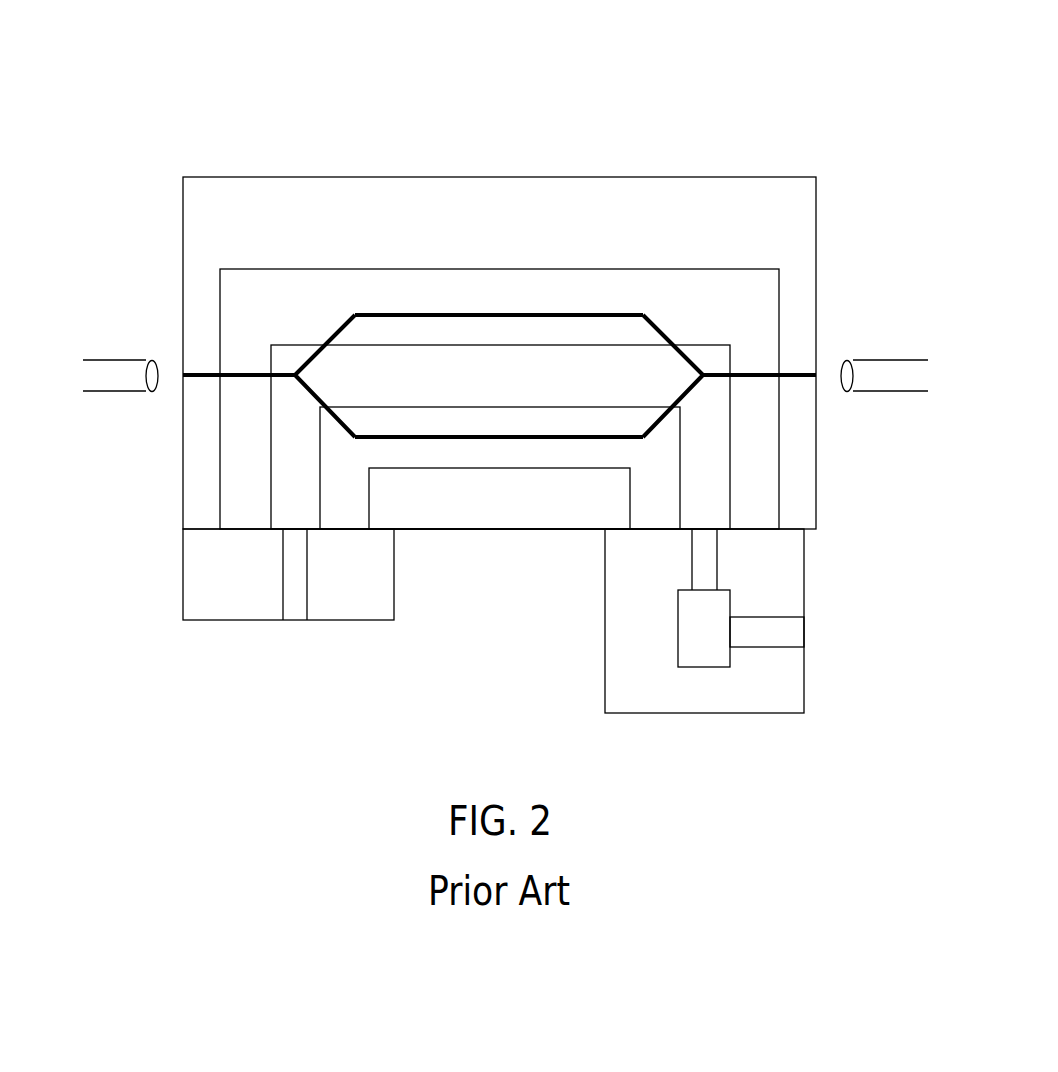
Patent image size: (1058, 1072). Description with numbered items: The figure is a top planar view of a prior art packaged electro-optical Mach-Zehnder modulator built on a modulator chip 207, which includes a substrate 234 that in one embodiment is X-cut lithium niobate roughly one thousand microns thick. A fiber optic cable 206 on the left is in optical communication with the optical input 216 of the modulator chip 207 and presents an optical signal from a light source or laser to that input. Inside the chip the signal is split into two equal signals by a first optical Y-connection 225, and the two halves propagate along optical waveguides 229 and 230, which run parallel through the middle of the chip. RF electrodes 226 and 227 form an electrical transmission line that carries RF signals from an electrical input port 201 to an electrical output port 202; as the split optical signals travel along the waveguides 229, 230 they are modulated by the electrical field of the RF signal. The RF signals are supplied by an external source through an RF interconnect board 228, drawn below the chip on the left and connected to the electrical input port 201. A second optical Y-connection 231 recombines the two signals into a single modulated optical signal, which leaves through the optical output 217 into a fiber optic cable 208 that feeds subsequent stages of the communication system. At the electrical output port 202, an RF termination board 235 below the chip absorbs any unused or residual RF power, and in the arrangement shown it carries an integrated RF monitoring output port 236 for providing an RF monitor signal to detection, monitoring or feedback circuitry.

The electrical input port 201 is at (295, 529).
The electrical output port 202 is at (702, 528).
The fiber optic cable 206 is at (97, 348).
The modulator chip 207 is at (778, 145).
The fiber optic cable 208 is at (880, 357).
The optical input 216 is at (182, 373).
The optical output 217 is at (818, 372).
The first optical Y-connection 225 is at (295, 375).
The RF electrode 226 is at (567, 208).
The RF electrode 227 is at (418, 378).
The RF interconnect board 228 is at (347, 570).
The optical waveguide 229 is at (593, 310).
The optical waveguide 230 is at (568, 440).
The second optical Y-connection 231 is at (703, 377).
The substrate 234 is at (245, 317).
The RF termination board 235 is at (762, 572).
The RF monitoring output port 236 is at (804, 632).